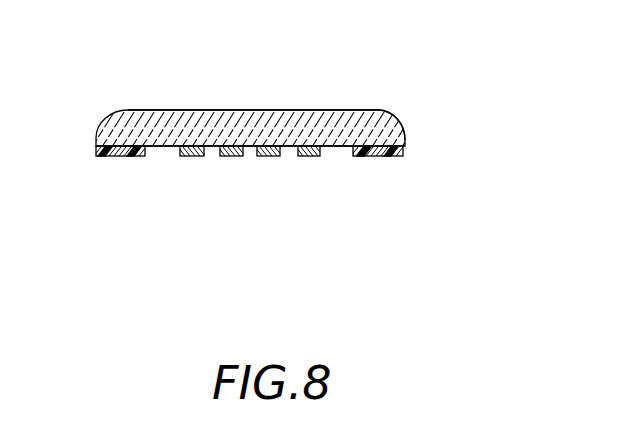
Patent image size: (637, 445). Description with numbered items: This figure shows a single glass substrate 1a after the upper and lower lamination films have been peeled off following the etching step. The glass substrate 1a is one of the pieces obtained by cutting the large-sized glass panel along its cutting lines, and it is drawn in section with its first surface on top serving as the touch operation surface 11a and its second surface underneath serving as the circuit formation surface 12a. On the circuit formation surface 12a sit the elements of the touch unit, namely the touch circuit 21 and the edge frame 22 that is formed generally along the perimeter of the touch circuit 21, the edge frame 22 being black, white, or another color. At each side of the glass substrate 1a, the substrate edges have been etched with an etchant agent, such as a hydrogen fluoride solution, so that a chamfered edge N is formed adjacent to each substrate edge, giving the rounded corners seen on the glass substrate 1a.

The glass substrate 1a is at (288, 110).
The touch operation surface 11a is at (347, 110).
The circuit formation surface 12a is at (333, 147).
The touch circuit 21 is at (307, 157).
The edge frame 22 is at (373, 157).
The chamfered edge N is at (385, 112).